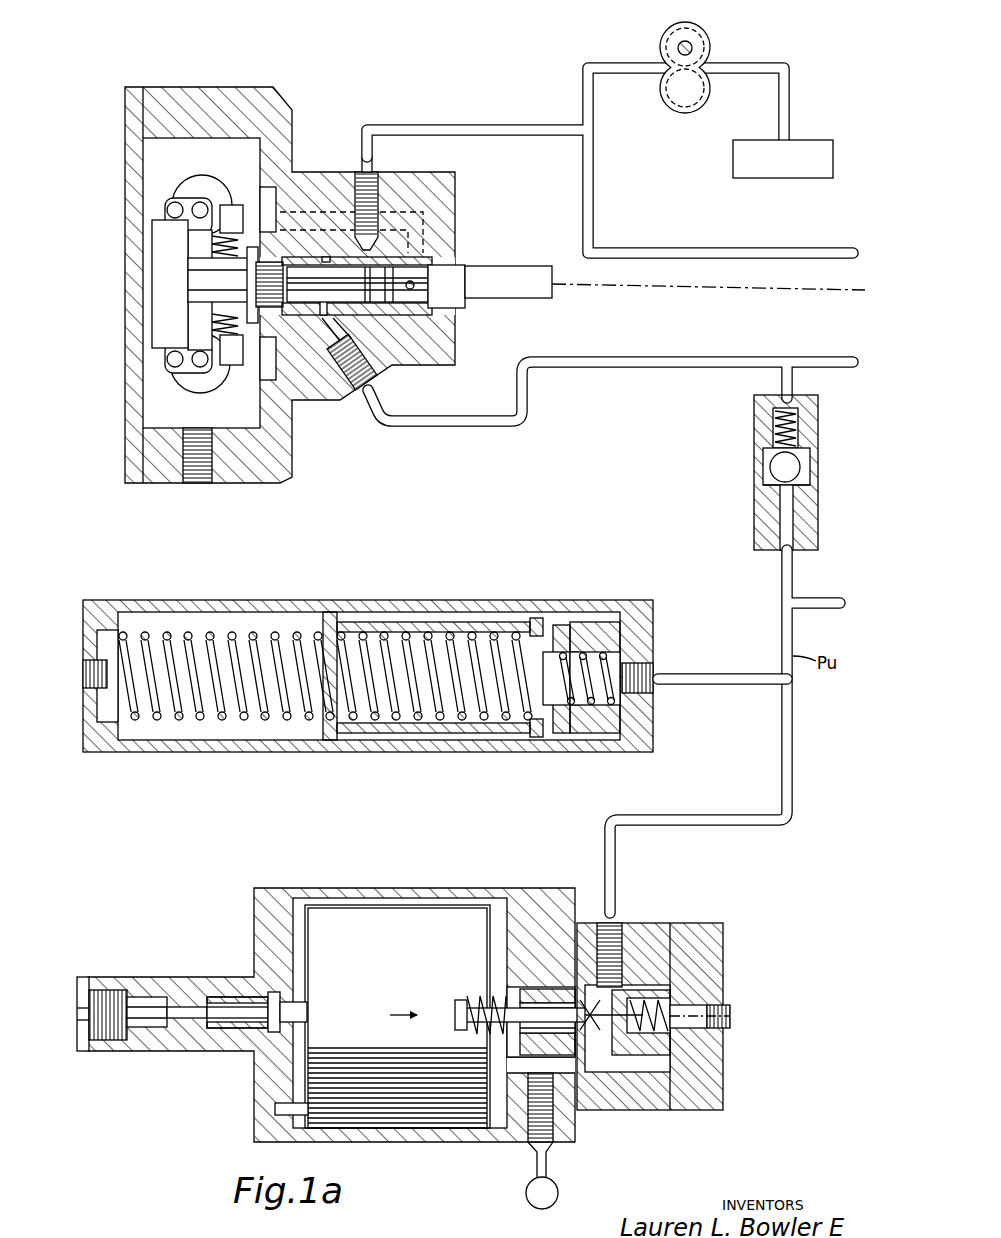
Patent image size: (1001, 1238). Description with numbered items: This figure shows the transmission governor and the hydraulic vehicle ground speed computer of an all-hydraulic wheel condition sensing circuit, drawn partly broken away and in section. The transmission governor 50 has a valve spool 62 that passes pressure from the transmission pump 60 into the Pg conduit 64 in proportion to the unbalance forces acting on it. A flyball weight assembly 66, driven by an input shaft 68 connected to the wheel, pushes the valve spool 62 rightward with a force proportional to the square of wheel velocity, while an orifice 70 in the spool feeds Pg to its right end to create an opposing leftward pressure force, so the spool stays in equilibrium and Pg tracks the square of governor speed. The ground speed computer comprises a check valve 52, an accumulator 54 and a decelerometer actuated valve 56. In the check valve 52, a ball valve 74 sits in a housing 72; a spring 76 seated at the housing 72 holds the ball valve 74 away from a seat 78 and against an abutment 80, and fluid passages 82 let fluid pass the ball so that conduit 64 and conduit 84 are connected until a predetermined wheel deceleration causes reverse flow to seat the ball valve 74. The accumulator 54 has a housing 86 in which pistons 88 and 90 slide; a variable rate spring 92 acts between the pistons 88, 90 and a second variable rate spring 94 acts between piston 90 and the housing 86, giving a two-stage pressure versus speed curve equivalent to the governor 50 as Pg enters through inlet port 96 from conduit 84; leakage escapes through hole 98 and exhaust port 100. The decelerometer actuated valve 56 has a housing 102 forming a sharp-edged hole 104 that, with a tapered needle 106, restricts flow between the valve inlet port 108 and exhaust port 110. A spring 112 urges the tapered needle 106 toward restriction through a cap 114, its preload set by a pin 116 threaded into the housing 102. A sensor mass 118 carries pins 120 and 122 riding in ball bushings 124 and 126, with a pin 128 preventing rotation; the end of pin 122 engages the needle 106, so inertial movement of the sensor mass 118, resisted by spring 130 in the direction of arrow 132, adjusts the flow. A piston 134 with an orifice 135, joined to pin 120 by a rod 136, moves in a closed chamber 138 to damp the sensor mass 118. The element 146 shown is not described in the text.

The transmission governor 50 is at (295, 112).
The check valve 52 is at (750, 455).
The accumulator 54 is at (472, 576).
The decelerometer actuated valve 56 is at (451, 872).
The transmission pump 60 is at (712, 41).
The valve spool 62 is at (347, 280).
The Pg conduit 64 is at (716, 358).
The flyball weight assembly 66 is at (160, 236).
The input shaft 68 is at (520, 276).
The orifice 70 is at (446, 286).
The housing 72 is at (766, 428).
The ball valve 74 is at (796, 466).
The spring 76 is at (800, 421).
The seat 78 is at (804, 456).
The abutment 80 is at (772, 480).
The fluid passages 82 is at (800, 497).
The conduit 84 is at (824, 600).
The housing 86 is at (341, 612).
The piston 88 is at (601, 624).
The piston 90 is at (385, 624).
The variable rate spring 92 is at (558, 650).
The second variable rate spring 94 is at (264, 634).
The inlet port 96 is at (650, 678).
The hole 98 is at (535, 690).
The exhaust port 100 is at (92, 680).
The housing 102 is at (668, 935).
The sharp-edged hole 104 is at (550, 1010).
The tapered needle 106 is at (630, 1000).
The valve inlet port 108 is at (613, 930).
The exhaust port 110 is at (550, 1123).
The spring 112 is at (666, 1006).
The cap 114 is at (660, 1028).
The pin 116 is at (732, 1015).
The sensor mass 118 is at (378, 917).
The pin 120 is at (224, 1006).
The pin 122 is at (490, 1006).
The ball bushing 124 is at (243, 998).
The ball bushing 126 is at (540, 1000).
The pin 128 is at (277, 1110).
The spring 130 is at (469, 1015).
The arrow 132 is at (405, 1012).
The piston 134 is at (150, 1028).
The orifice 135 is at (140, 1000).
The rod 136 is at (190, 1020).
The closed chamber 138 is at (130, 1040).
The return line 146 is at (818, 257).